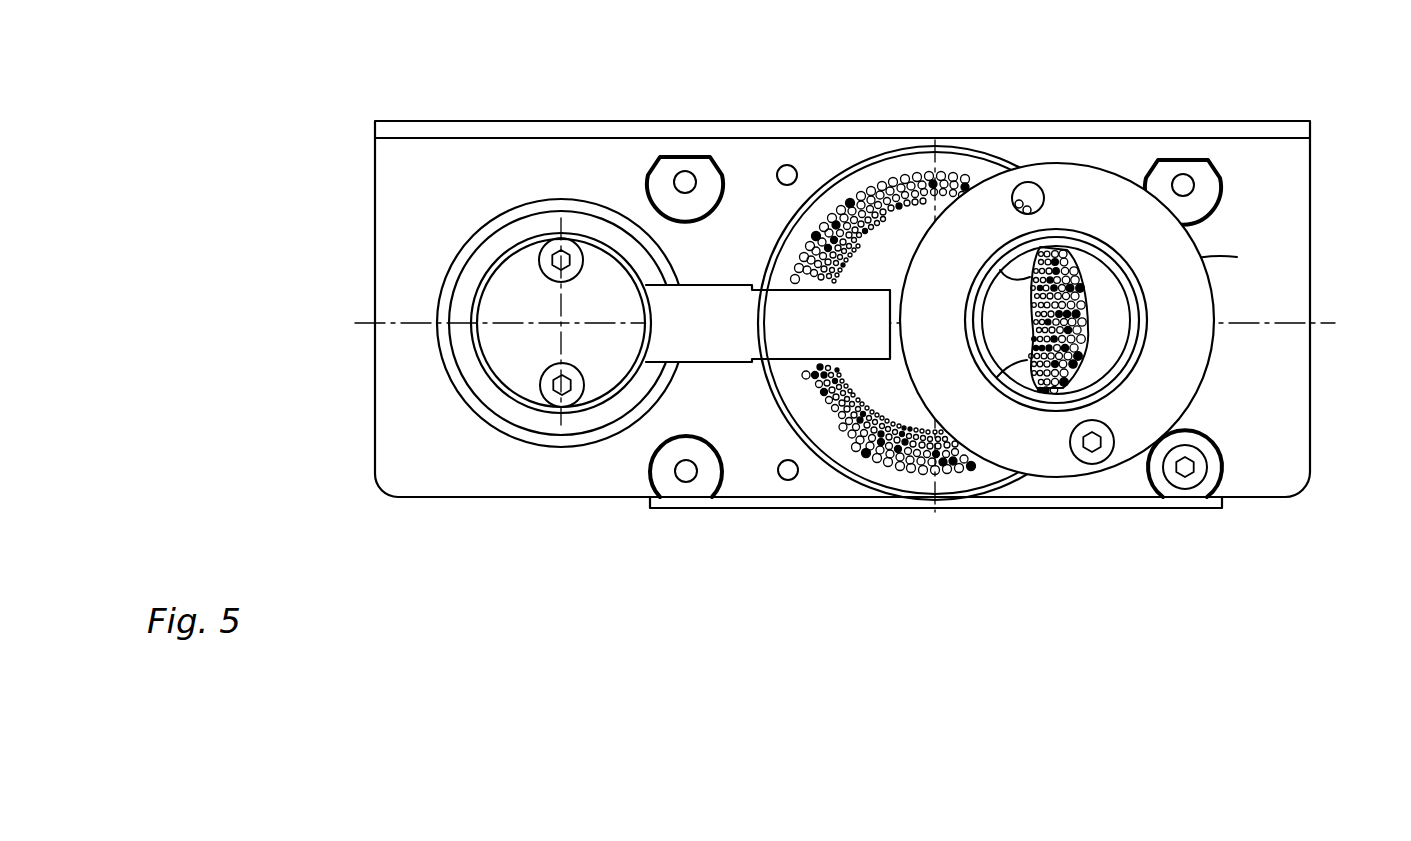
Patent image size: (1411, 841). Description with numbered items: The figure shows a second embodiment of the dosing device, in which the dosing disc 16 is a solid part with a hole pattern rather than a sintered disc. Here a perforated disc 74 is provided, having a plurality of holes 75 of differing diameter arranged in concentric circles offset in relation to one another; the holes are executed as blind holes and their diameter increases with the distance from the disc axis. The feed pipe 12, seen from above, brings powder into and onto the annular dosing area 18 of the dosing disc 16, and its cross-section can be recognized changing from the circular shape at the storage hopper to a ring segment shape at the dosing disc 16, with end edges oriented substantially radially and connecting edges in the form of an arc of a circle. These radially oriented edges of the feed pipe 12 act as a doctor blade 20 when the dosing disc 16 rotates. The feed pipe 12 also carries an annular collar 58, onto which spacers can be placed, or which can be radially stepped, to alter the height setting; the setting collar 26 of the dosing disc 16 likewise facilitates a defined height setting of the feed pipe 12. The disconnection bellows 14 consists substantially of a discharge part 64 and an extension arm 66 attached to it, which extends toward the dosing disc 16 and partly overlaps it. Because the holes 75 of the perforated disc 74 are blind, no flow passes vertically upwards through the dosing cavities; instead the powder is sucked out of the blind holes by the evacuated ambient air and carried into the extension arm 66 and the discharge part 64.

The feed pipe 12 is at (1237, 257).
The disconnection bellows 14 is at (510, 440).
The dosing disc 16 is at (935, 310).
The annular dosing area 18 is at (892, 467).
The doctor blade 20 is at (1043, 247).
The setting collar 26 is at (843, 450).
The annular collar 58 is at (1093, 187).
The discharge part 64 is at (512, 237).
The extension arm 66 is at (730, 297).
The perforated disc 74 is at (898, 163).
The holes 75 is at (968, 175).